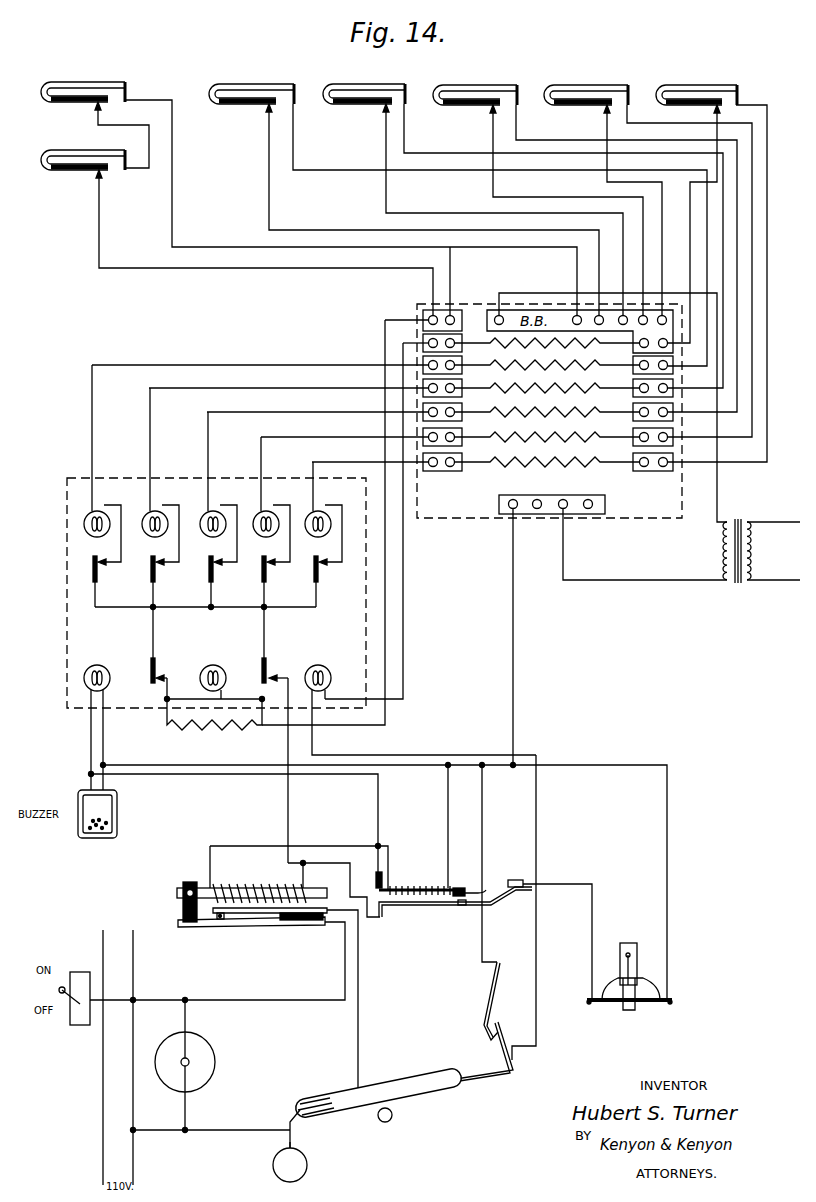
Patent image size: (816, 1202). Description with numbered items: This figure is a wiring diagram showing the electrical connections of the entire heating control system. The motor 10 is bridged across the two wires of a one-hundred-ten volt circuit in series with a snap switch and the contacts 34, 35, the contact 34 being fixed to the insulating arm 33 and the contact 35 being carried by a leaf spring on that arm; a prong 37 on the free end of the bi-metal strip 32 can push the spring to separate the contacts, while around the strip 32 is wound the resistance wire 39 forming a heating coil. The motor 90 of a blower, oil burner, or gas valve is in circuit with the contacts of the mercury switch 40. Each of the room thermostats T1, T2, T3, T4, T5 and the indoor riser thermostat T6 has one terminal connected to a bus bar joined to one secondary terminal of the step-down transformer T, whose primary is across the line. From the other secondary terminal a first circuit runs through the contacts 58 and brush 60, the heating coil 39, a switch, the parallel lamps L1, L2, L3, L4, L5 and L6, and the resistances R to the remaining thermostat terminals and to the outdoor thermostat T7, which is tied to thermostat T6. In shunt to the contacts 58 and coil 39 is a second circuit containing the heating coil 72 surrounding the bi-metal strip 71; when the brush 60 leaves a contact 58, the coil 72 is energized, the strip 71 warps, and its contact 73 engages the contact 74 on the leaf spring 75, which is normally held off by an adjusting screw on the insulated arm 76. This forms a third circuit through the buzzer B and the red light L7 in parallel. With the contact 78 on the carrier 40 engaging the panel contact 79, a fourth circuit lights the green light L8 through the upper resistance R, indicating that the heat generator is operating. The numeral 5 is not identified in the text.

The switch 5 is at (272, 670).
The motor 10 is at (210, 1058).
The bi-metal strip 32 is at (243, 880).
The arm 33 is at (300, 922).
The contact 34 is at (216, 922).
The contact 35 is at (221, 920).
The prong 37 is at (182, 908).
The resistance wire 39 is at (264, 886).
The mercury switch carrier 40 is at (410, 1076).
The contacts 58 is at (637, 1008).
The brush 60 is at (638, 954).
The bi-metal thermostat strip 71 is at (459, 886).
The heating coil 72 is at (421, 886).
The contact 73 is at (474, 892).
The contact 74 is at (464, 906).
The leaf spring 75 is at (396, 908).
The insulated arm 76 is at (525, 882).
The contact 78 is at (500, 1060).
The contact 79 is at (489, 995).
The motor 90 is at (272, 1160).
The room thermostat T1 is at (262, 83).
The room thermostat T2 is at (372, 83).
The room thermostat T3 is at (483, 84).
The room thermostat T4 is at (589, 84).
The room thermostat T5 is at (706, 84).
The indoor riser thermostat T6 is at (112, 82).
The outdoor thermostat T7 is at (50, 155).
The step-down transformer T is at (736, 518).
The resistances R is at (547, 409).
The buzzer B is at (84, 521).
The lamp L1 is at (90, 536).
The lamp L2 is at (148, 536).
The lamp L3 is at (206, 536).
The lamp L4 is at (260, 536).
The lamp L5 is at (313, 536).
The lamp L6 is at (226, 682).
The red light L7 is at (110, 684).
The green light L8 is at (331, 682).